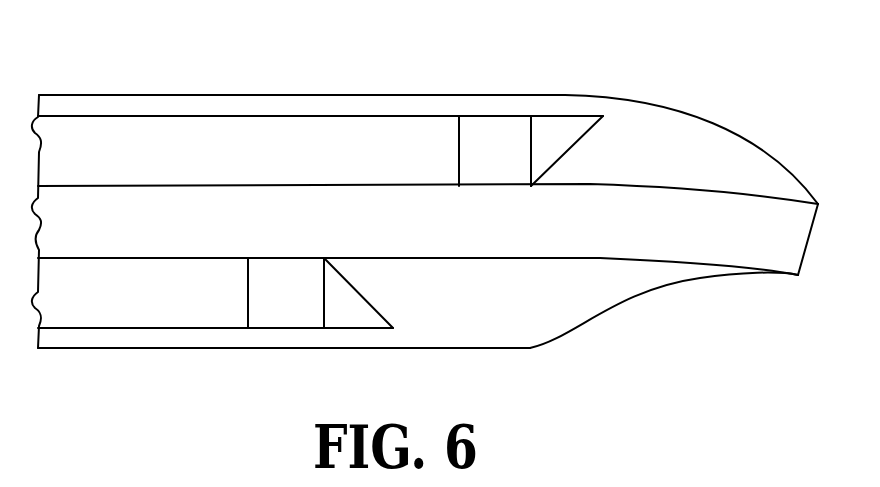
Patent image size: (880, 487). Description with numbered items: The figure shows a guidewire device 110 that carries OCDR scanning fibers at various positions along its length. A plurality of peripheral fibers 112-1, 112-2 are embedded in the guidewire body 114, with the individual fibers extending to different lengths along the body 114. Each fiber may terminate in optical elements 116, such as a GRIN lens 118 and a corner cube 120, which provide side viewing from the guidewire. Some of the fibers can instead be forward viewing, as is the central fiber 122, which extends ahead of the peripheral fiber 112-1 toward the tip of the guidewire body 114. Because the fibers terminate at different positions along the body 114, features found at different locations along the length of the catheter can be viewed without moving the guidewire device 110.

The guidewire device 110 is at (425, 218).
The peripheral fiber 112-1 is at (428, 154).
The peripheral fiber 112-2 is at (418, 331).
The guidewire body 114 is at (590, 320).
The optical elements 116 is at (532, 84).
The GRIN lens 118 is at (280, 302).
The corner cube 120 is at (345, 298).
The central fiber 122 is at (530, 238).